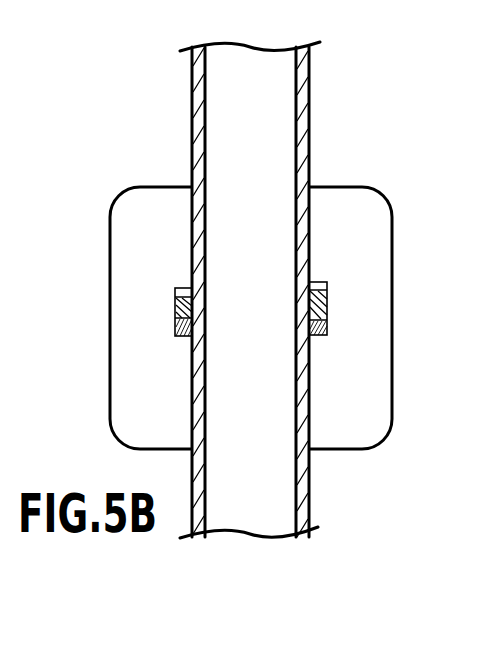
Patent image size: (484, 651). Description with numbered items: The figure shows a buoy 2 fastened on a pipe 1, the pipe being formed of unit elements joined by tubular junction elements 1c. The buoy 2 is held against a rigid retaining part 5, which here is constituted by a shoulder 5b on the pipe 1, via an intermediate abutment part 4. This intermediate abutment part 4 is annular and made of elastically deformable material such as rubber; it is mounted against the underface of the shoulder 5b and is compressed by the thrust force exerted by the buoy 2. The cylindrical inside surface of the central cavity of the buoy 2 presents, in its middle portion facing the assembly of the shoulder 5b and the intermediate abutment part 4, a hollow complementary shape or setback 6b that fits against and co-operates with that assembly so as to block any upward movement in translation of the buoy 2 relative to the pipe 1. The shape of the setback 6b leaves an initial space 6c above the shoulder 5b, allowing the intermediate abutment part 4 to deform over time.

The pipe 1 is at (281, 290).
The tubular junction element 1c is at (302, 488).
The buoy 2 is at (357, 218).
The intermediate abutment part 4 is at (176, 326).
The retaining part 5 is at (271, 291).
The shoulder 5b is at (176, 304).
The hollow complementary shape (setback) 6b is at (271, 272).
The initial space 6c is at (183, 289).